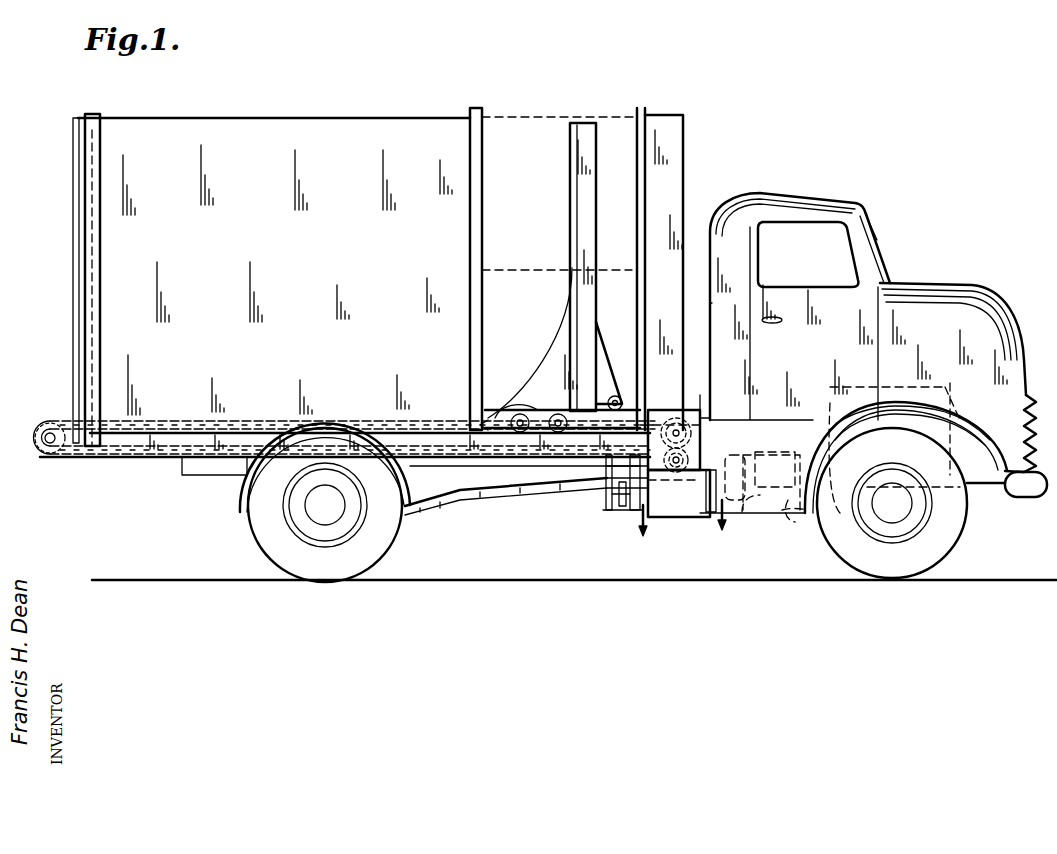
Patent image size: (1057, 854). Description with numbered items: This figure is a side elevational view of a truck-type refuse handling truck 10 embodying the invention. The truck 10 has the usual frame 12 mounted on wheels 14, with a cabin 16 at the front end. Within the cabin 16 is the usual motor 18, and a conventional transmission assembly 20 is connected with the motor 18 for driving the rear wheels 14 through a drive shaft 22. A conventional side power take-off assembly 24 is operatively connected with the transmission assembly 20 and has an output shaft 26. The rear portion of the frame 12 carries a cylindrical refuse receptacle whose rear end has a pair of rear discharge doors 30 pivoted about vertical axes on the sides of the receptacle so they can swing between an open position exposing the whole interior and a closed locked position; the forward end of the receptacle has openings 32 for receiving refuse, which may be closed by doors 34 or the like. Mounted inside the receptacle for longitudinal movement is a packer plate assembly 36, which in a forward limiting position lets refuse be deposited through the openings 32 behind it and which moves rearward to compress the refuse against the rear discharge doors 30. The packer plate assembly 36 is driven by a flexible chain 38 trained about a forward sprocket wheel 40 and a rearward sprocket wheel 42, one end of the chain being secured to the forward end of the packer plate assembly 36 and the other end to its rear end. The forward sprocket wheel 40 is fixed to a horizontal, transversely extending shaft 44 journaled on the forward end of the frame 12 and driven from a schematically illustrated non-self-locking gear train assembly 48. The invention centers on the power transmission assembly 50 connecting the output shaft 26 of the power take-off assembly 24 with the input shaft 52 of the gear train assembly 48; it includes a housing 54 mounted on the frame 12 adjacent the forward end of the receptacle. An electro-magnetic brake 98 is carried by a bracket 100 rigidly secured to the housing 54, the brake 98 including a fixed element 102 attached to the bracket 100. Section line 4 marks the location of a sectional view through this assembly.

The refuse handling truck 10 is at (878, 201).
The frame 12 is at (488, 468).
The wheels 14 is at (345, 574).
The cabin 16 is at (918, 293).
The motor 18 is at (950, 380).
The transmission assembly 20 is at (766, 452).
The drive shaft 22 is at (556, 488).
The side power take-off assembly 24 is at (782, 510).
The output shaft 26 is at (742, 512).
The rear discharge doors 30 is at (73, 290).
The openings 32 is at (482, 232).
The doors 34 is at (542, 122).
The packer plate assembly 36 is at (572, 264).
The flexible chain 38 is at (565, 412).
The forward sprocket wheel 40 is at (684, 410).
The rearward sprocket wheel 42 is at (38, 452).
The shaft 44 is at (705, 418).
The non-self-locking gear train assembly 48 is at (700, 395).
The power transmission assembly 50 is at (692, 522).
The input shaft 52 is at (648, 484).
The housing 54 is at (712, 522).
The electro-magnetic brake 98 is at (614, 510).
The bracket 100 is at (612, 494).
The fixed element 102 is at (612, 478).
The section line 4 is at (681, 528).